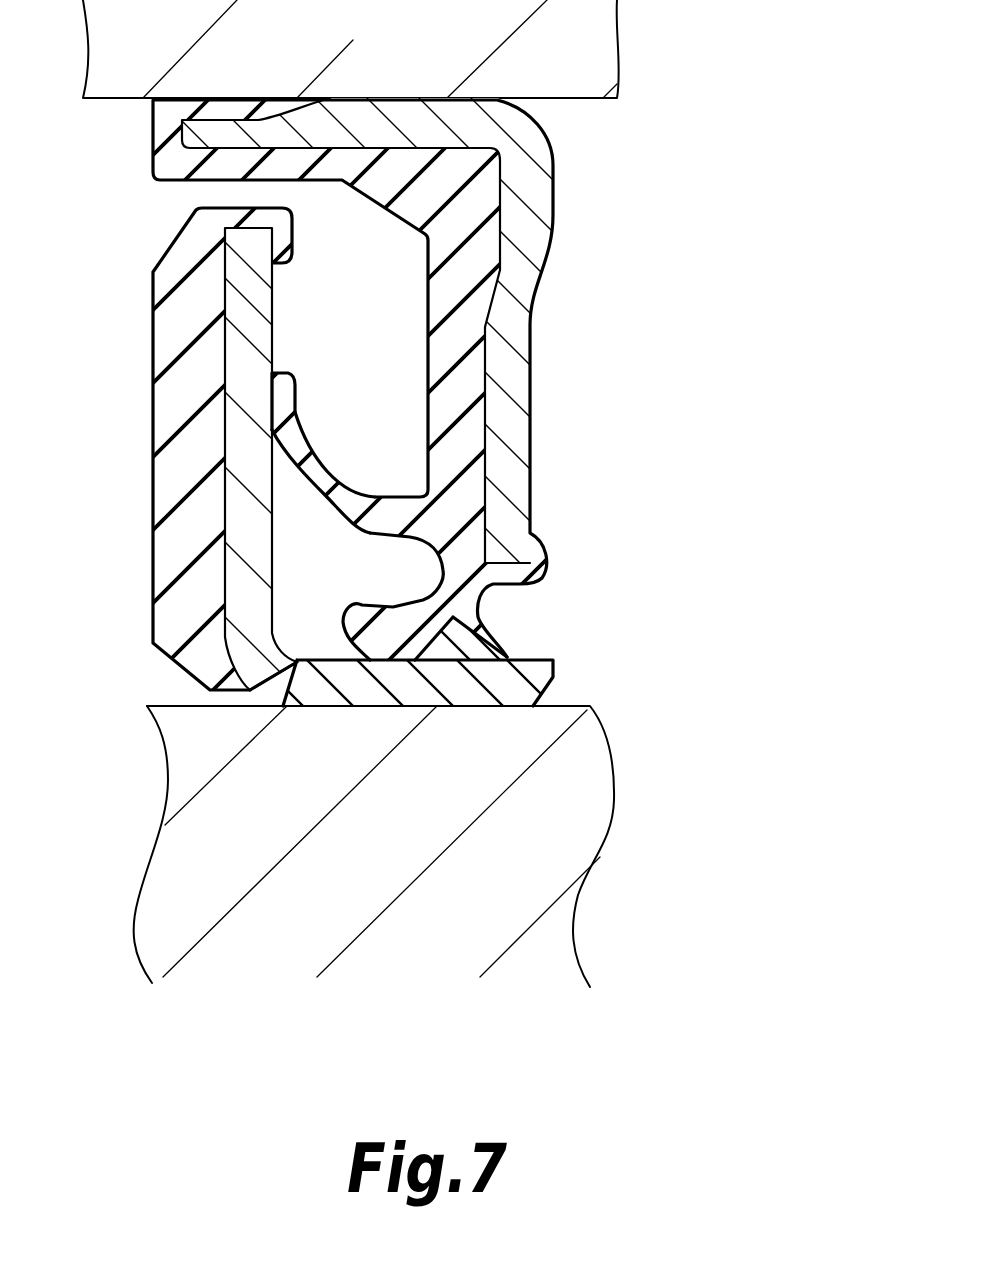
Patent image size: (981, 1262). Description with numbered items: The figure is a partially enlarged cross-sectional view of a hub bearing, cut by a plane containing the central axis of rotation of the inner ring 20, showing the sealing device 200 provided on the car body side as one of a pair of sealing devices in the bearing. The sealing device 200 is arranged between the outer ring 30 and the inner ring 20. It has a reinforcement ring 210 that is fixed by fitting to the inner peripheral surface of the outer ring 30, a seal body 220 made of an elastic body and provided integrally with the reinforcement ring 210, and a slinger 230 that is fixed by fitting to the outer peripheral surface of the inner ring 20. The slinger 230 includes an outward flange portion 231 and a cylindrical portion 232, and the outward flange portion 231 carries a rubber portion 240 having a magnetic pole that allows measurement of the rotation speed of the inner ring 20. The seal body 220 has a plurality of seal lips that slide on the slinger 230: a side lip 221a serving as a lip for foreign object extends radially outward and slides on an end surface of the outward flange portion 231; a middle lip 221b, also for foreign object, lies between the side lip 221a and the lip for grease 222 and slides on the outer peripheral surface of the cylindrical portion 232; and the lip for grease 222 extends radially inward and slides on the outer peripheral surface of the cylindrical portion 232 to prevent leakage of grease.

The sealing device 200 is at (646, 172).
The reinforcement ring 210 is at (540, 230).
The seal body 220 is at (395, 288).
The side lip 221a is at (280, 407).
The middle lip 221b is at (343, 607).
The lip for grease 222 is at (492, 635).
The slinger 230 is at (297, 352).
The outward flange portion 231 is at (190, 252).
The cylindrical portion 232 is at (487, 706).
The rubber portion 240 is at (167, 483).
The outer ring 30 is at (351, 49).
The inner ring 20 is at (374, 846).